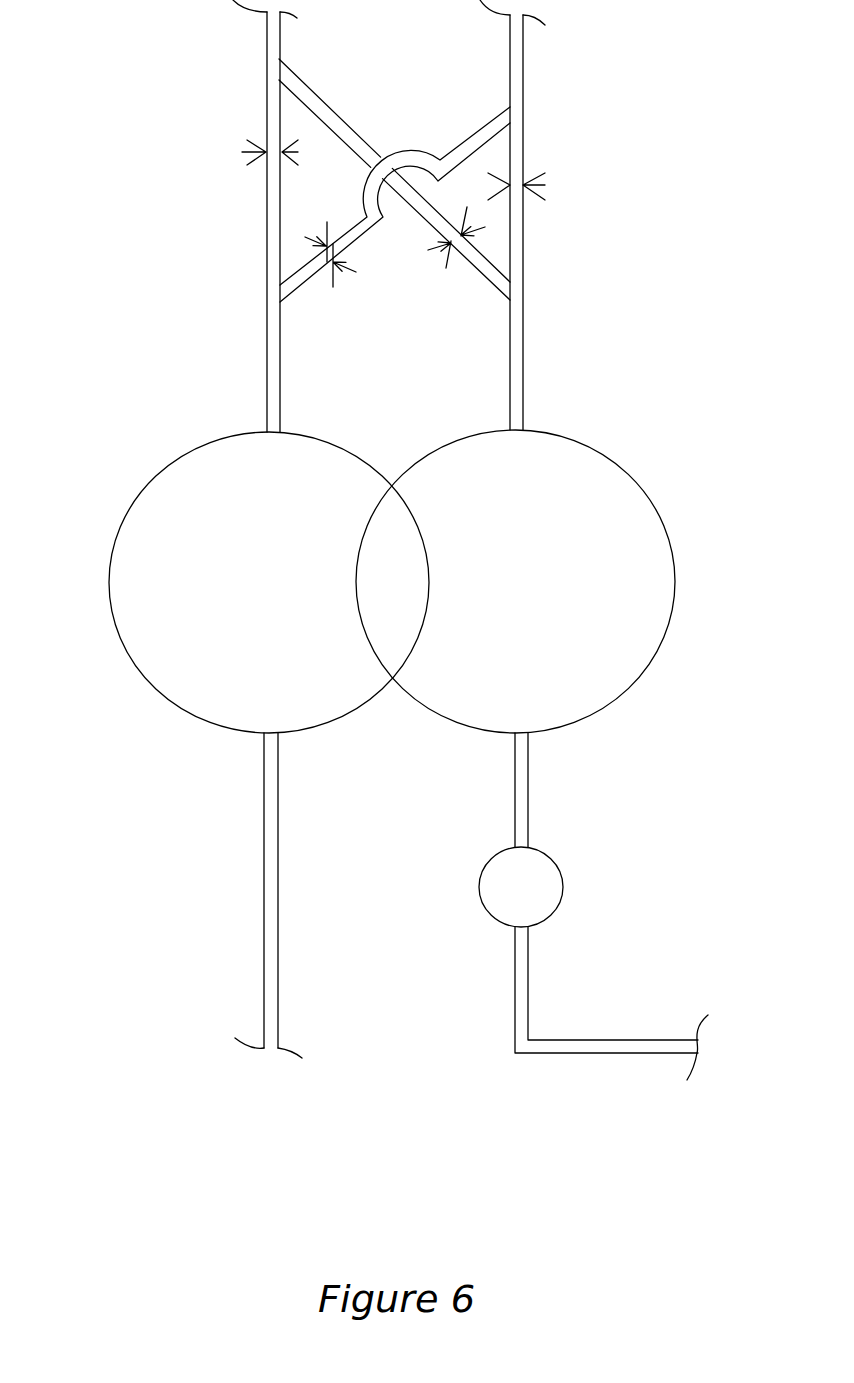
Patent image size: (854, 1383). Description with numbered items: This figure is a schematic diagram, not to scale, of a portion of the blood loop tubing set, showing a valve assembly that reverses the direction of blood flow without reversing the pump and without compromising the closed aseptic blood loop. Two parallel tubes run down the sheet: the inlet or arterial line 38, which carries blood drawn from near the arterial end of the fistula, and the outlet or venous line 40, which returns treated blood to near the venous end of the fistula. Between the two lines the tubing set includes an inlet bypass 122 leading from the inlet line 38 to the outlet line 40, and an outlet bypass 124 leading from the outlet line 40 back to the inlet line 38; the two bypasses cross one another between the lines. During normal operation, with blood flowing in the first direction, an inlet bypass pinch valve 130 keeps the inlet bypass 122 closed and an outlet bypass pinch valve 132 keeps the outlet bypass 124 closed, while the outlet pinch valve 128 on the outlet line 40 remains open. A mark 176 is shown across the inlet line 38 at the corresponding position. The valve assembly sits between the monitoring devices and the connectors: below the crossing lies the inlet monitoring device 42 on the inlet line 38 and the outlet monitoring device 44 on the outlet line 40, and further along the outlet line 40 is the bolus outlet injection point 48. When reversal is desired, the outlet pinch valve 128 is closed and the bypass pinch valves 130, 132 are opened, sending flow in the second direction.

The inlet line 38 is at (267, 40).
The outlet line 40 is at (525, 60).
The inlet monitoring device 42 is at (160, 473).
The outlet monitoring device 44 is at (593, 448).
The bolus outlet injection point 48 is at (538, 847).
The inlet bypass 122 is at (488, 116).
The outlet bypass 124 is at (322, 94).
The outlet pinch valve 128 is at (545, 186).
The inlet bypass pinch valve 130 is at (305, 237).
The outlet bypass pinch valve 132 is at (485, 228).
The diameter of first conduit 176 is at (240, 152).